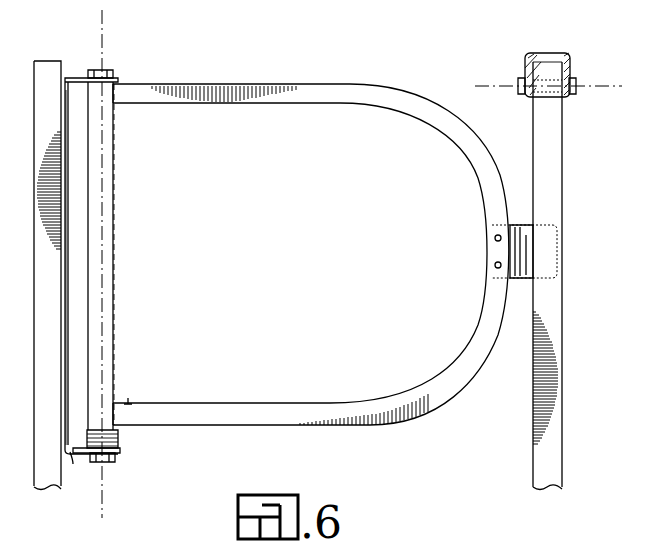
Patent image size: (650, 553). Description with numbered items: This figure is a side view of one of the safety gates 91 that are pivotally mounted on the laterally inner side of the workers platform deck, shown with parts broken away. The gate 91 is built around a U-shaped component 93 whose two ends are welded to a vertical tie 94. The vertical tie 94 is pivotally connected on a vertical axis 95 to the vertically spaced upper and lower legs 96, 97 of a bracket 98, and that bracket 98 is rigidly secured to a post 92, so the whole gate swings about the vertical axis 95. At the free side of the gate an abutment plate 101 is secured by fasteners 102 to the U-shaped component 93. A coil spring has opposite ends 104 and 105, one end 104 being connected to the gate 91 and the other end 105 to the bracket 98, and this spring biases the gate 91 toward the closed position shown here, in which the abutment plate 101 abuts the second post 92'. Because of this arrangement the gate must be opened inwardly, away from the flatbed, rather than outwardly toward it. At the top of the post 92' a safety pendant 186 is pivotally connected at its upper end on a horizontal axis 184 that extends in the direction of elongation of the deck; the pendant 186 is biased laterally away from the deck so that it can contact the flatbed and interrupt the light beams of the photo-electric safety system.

The safety gate 91 is at (211, 82).
The post 92 is at (32, 275).
The post 92' is at (569, 276).
The U-shaped component 93 is at (366, 84).
The vertical tie 94 is at (97, 215).
The vertical axis 95 is at (102, 36).
The upper leg of bracket 96 is at (80, 78).
The lower leg of bracket 97 is at (117, 454).
The bracket 98 is at (67, 298).
The abutment plate 101 is at (518, 225).
The fasteners 102 is at (495, 263).
The spring end 104 is at (129, 400).
The spring end 105 is at (73, 464).
The horizontal axis 184 is at (607, 88).
The safety pendant 186 is at (548, 55).